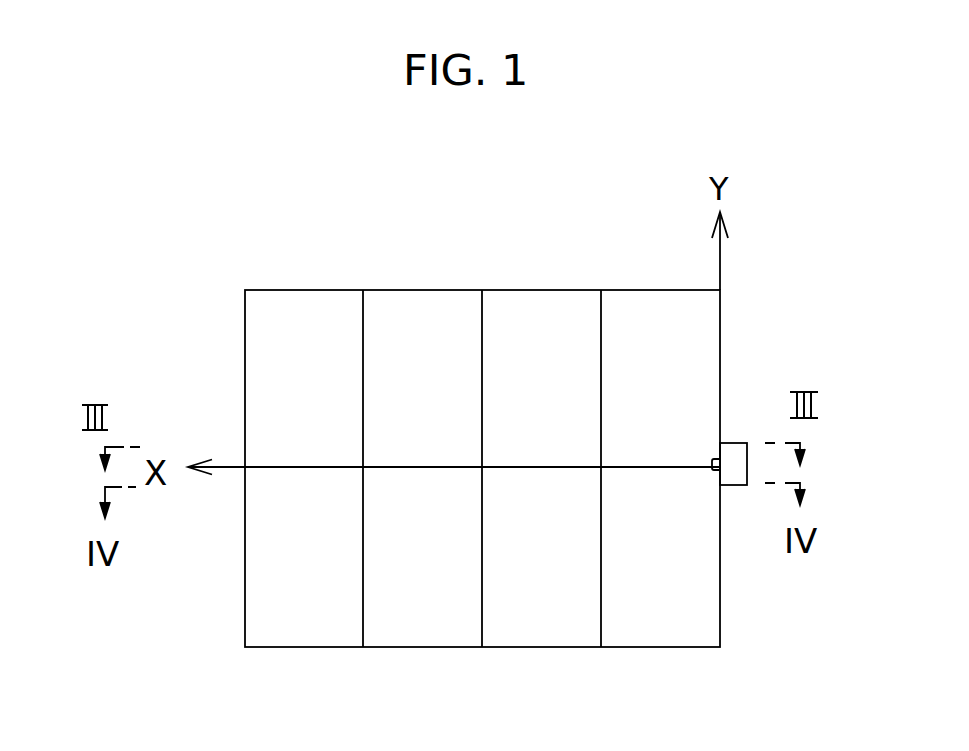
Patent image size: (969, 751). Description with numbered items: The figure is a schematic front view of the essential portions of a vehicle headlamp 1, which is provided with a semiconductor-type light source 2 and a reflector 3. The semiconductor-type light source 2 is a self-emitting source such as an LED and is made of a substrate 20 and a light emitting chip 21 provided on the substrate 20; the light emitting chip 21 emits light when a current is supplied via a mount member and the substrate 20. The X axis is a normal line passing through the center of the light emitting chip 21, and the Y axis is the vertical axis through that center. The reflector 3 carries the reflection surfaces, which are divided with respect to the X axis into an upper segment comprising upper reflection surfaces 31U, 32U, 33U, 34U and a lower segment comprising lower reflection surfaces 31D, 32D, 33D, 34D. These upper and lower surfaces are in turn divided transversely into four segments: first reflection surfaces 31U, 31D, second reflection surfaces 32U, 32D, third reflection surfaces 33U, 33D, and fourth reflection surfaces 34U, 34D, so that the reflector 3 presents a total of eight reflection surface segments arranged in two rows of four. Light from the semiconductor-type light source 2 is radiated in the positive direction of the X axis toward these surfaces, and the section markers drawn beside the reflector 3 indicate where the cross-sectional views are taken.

The vehicle headlamp 1 is at (578, 258).
The semiconductor-type light source 2 is at (732, 420).
The reflector 3 is at (252, 285).
The substrate 20 is at (733, 457).
The light emitting chip 21 is at (713, 470).
The first upper reflection surface 31U is at (659, 359).
The first lower reflection surface 31D is at (661, 583).
The second upper reflection surface 32U is at (544, 359).
The second lower reflection surface 32D is at (544, 583).
The third upper reflection surface 33U is at (420, 359).
The third lower reflection surface 33D is at (420, 583).
The fourth upper reflection surface 34U is at (305, 359).
The fourth lower reflection surface 34D is at (296, 583).